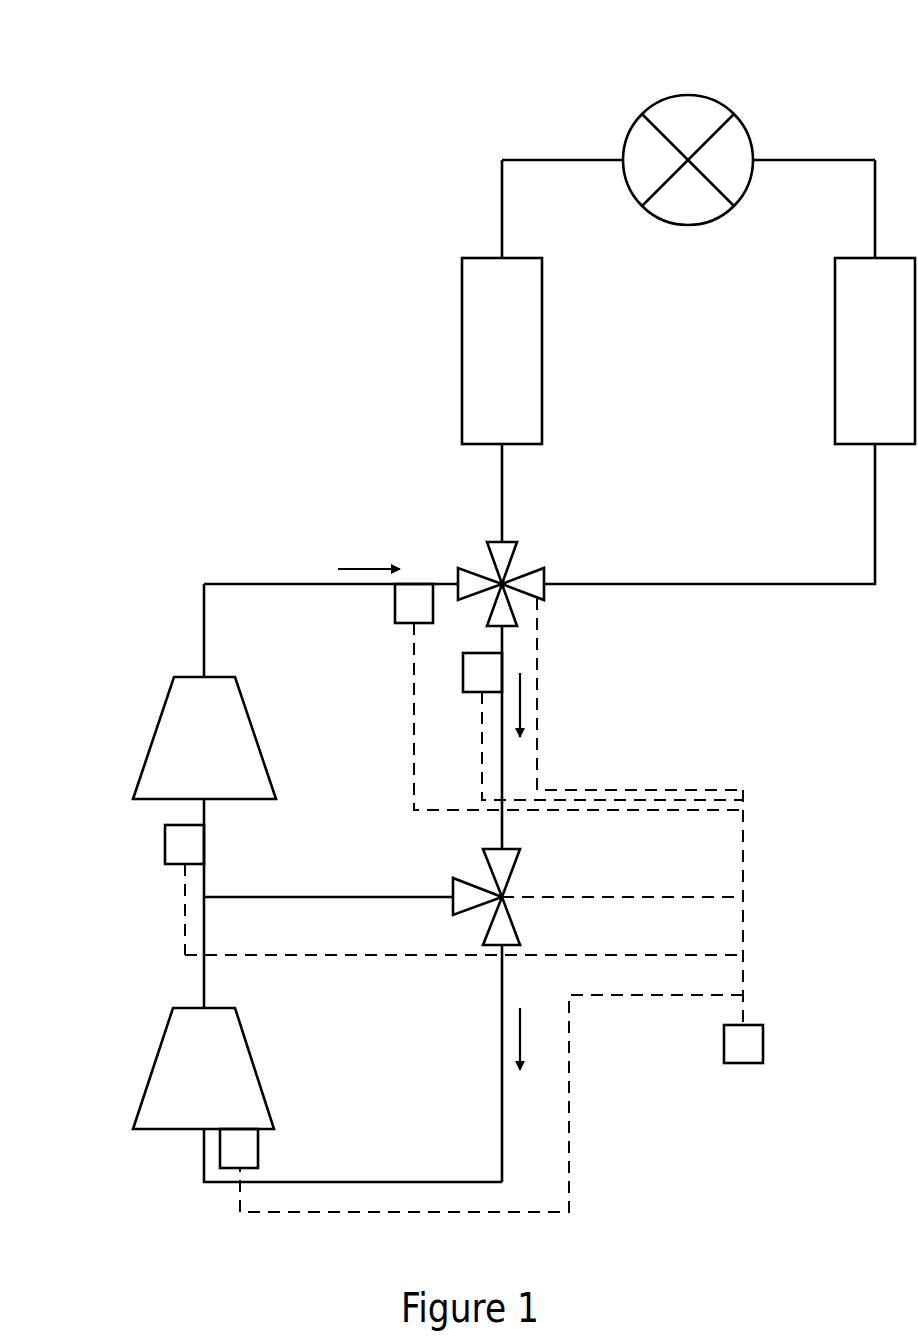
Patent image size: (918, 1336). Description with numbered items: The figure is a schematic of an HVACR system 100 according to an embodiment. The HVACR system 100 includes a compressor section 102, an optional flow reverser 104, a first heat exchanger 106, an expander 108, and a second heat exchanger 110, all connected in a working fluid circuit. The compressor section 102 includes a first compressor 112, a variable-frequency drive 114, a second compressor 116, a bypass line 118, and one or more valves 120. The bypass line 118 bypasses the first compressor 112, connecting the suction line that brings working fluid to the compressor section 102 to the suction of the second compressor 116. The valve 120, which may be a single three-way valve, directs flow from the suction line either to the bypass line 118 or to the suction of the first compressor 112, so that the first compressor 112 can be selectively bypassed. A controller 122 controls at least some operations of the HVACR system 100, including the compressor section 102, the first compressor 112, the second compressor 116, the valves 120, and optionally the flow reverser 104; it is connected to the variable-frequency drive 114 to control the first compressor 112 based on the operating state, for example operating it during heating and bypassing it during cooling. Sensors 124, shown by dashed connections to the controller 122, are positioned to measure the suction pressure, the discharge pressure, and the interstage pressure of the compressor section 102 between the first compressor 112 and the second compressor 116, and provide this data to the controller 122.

The HVACR system 100 is at (300, 66).
The compressor section 102 is at (132, 613).
The flow reverser 104 is at (472, 572).
The first heat exchanger 106 is at (462, 352).
The expander 108 is at (687, 95).
The second heat exchanger 110 is at (835, 350).
The first compressor 112 is at (153, 1068).
The variable-frequency drive 114 is at (262, 1150).
The second compressor 116 is at (157, 736).
The bypass line 118 is at (328, 897).
The valve 120 is at (513, 873).
The controller 122 is at (765, 1045).
The sensor 124 is at (395, 600).